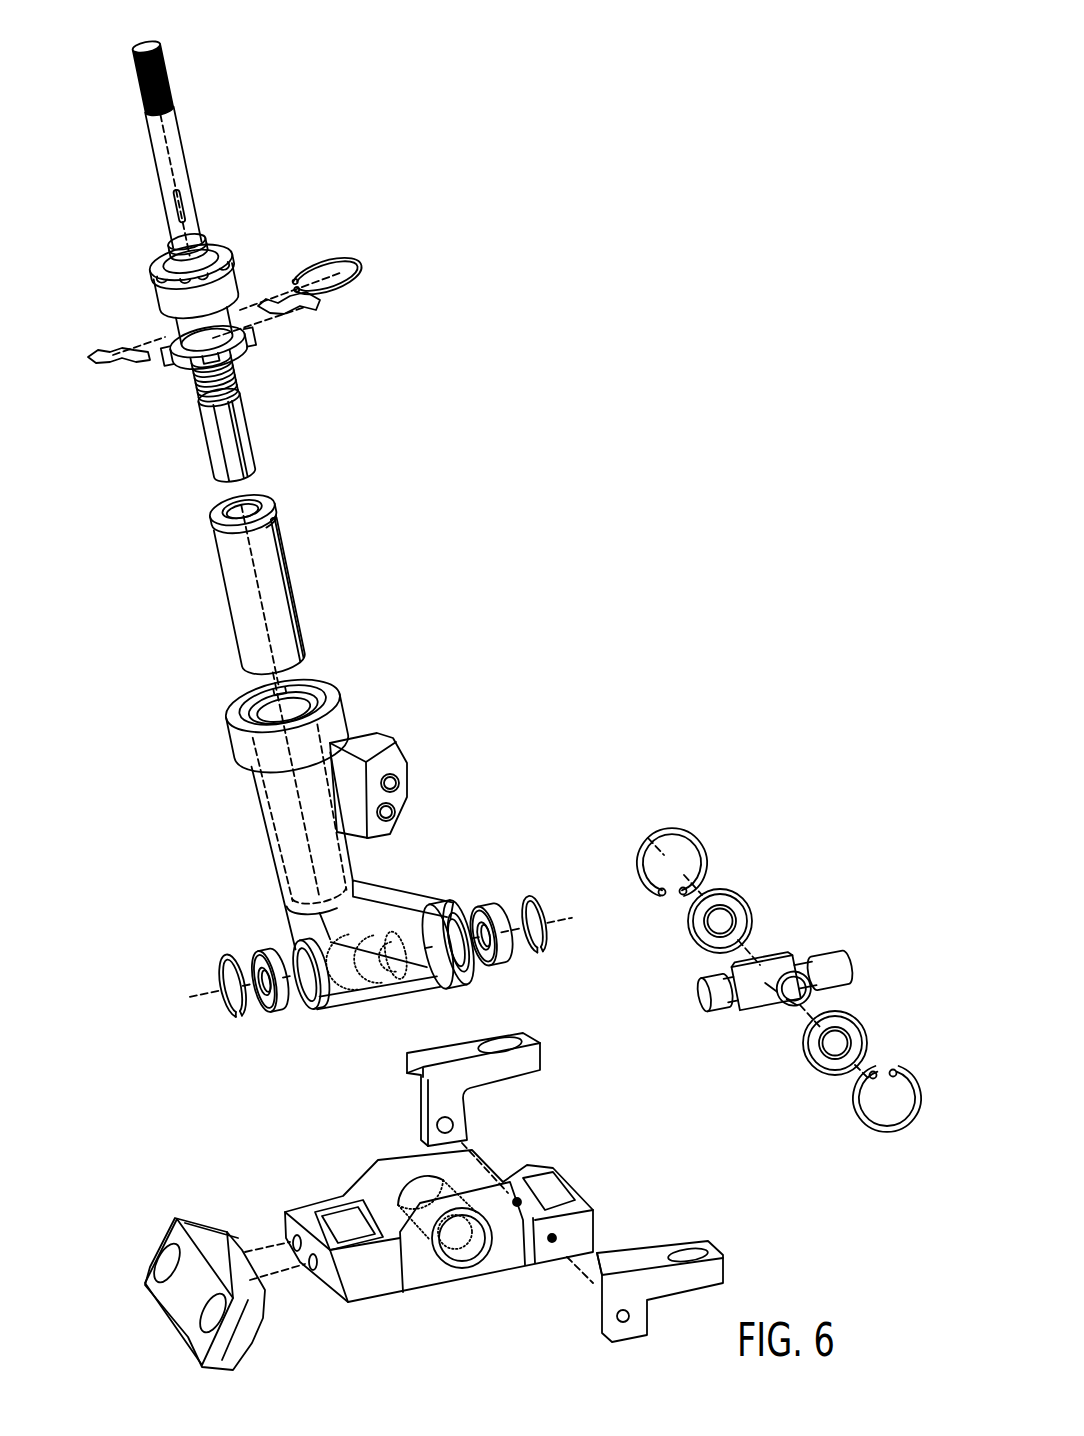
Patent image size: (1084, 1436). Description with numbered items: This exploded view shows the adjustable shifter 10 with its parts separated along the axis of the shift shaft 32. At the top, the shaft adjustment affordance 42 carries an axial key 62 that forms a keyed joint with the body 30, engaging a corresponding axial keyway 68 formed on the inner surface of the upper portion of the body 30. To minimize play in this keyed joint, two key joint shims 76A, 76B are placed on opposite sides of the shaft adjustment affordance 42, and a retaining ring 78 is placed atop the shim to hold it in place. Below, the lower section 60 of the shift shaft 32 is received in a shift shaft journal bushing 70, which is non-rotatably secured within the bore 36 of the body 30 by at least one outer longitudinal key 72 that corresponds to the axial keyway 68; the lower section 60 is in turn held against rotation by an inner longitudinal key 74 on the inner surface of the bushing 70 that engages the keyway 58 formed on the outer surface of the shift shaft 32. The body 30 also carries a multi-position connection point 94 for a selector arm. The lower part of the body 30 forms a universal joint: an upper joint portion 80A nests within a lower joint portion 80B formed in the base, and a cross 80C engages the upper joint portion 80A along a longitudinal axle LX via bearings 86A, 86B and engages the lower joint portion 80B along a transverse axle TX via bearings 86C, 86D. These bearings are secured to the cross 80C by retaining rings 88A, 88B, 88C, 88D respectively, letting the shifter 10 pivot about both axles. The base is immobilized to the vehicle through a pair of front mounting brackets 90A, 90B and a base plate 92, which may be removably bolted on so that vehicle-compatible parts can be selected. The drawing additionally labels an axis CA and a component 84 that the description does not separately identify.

The adjustable shifter 10 is at (791, 63).
The column axis CA is at (143, 42).
The shift shaft 32 is at (188, 175).
The shaft adjustment affordance 42 is at (233, 234).
The axial key 62 is at (243, 337).
The key joint shim 76A is at (310, 313).
The key joint shim 76B is at (97, 362).
The retaining ring 78 is at (353, 287).
The lower section 60 is at (231, 417).
The keyway 58 is at (207, 470).
The inner longitudinal key 74 is at (203, 507).
The shift shaft journal bushing 70 is at (255, 579).
The outer longitudinal key 72 is at (285, 520).
The axial keyway 68 is at (315, 687).
The body 30 is at (294, 808).
The bore 36 is at (265, 840).
The multi-position connection point 94 is at (410, 780).
The upper joint portion 80A is at (429, 947).
The longitudinal axle LX is at (700, 1001).
The retaining ring 88A is at (230, 953).
The bearing 86A is at (280, 1010).
The bearing 86B is at (497, 903).
The retaining ring 88B is at (540, 963).
The cross 80C is at (703, 1058).
The transverse axle TX is at (513, 1293).
The retaining ring 88C is at (686, 830).
The bearing 86C is at (740, 892).
The bearing 86D is at (817, 1073).
The retaining ring 88D is at (878, 1127).
The lower joint portion 80B is at (426, 1201).
The yoke block 84 is at (392, 1290).
The front mounting bracket 90A is at (520, 1077).
The front mounting bracket 90B is at (647, 1253).
The base plate 92 is at (193, 1215).